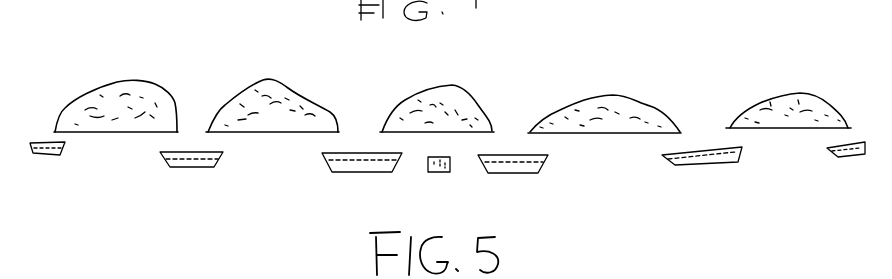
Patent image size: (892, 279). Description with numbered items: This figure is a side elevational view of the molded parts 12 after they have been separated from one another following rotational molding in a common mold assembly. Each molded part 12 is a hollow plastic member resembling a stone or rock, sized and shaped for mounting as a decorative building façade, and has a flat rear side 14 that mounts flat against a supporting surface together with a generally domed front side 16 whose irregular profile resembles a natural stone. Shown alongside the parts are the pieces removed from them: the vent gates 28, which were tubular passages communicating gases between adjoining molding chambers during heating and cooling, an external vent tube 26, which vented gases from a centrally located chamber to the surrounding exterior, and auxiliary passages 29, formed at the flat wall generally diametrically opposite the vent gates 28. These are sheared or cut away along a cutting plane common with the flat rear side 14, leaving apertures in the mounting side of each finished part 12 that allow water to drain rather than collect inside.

The molded part 12 is at (137, 65).
The flat rear side 14 is at (107, 133).
The domed front side 16 is at (155, 85).
The external vent tube 26 is at (438, 172).
The vent gate 28 is at (190, 168).
The auxiliary passage 29 is at (48, 155).